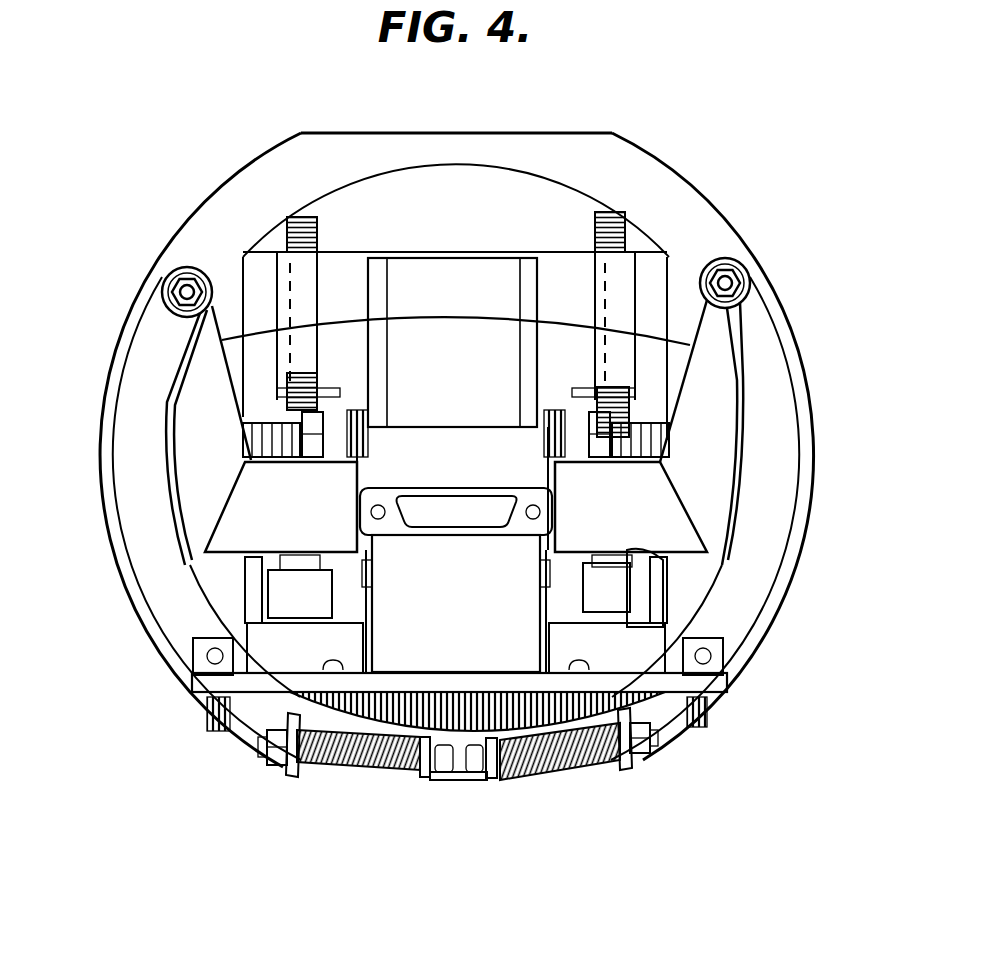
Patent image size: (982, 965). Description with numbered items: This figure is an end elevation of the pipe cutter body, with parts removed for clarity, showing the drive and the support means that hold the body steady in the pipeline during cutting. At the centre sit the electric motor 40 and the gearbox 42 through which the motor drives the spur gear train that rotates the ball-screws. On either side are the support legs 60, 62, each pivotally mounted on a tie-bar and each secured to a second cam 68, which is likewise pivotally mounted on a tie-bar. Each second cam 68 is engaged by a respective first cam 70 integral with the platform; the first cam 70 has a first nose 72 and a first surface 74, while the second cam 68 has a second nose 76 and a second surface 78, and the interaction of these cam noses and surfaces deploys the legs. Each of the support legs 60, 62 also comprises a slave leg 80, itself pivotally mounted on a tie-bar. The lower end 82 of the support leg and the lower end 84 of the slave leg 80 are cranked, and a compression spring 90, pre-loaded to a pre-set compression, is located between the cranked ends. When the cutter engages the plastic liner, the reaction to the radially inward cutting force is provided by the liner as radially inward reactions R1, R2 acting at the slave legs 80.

The electric motor 40 is at (437, 268).
The gearbox 42 is at (475, 644).
The support leg 60 is at (717, 590).
The support leg 62 is at (192, 587).
The second cam 68 is at (203, 383).
The first cam 70 is at (285, 538).
The first nose 72 is at (185, 563).
The first surface 74 is at (262, 482).
The second nose 76 is at (300, 417).
The second surface 78 is at (456, 322).
The slave leg 80 is at (232, 707).
The lower end 82 is at (502, 790).
The lower end 84 is at (283, 767).
The compression spring 90 is at (347, 767).
The radially inward reaction R1 is at (636, 787).
The radially inward reaction R2 is at (282, 786).